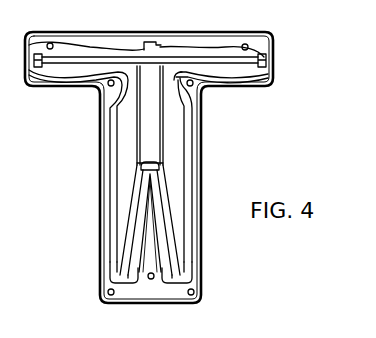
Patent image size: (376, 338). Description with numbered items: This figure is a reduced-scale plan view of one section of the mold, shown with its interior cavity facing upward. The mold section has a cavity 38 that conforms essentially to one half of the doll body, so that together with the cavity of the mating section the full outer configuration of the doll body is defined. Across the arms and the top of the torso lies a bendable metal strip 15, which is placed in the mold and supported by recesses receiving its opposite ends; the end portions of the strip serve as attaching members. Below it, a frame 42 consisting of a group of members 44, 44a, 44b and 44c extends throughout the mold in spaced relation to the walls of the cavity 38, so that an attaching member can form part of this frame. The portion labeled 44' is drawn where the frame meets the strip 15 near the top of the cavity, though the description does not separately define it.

The bendable metal strip 15 is at (217, 61).
The cavity 38 is at (175, 180).
The frame 42 is at (128, 172).
The member 44 is at (84, 164).
The strap loop end 44' is at (146, 32).
The member 44a is at (163, 135).
The member 44b is at (125, 258).
The member 44c is at (178, 252).